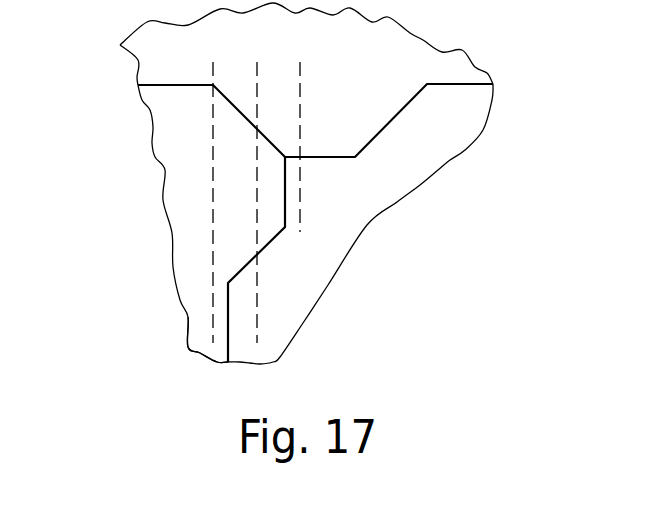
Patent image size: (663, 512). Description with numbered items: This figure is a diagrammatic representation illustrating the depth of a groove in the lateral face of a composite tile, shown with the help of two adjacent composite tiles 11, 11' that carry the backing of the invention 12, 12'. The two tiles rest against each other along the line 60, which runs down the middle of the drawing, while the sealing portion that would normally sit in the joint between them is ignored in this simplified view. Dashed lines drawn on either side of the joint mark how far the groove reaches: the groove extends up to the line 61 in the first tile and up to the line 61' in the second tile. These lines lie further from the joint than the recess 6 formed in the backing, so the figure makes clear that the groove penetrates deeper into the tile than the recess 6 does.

The composite tile 11 is at (346, 183).
The composite tile 11' is at (137, 204).
The recess 6 is at (285, 178).
The line 61 is at (437, 185).
The line 60 is at (258, 333).
The backing 12 is at (401, 266).
The backing 12' is at (137, 314).
The line 61' is at (130, 202).